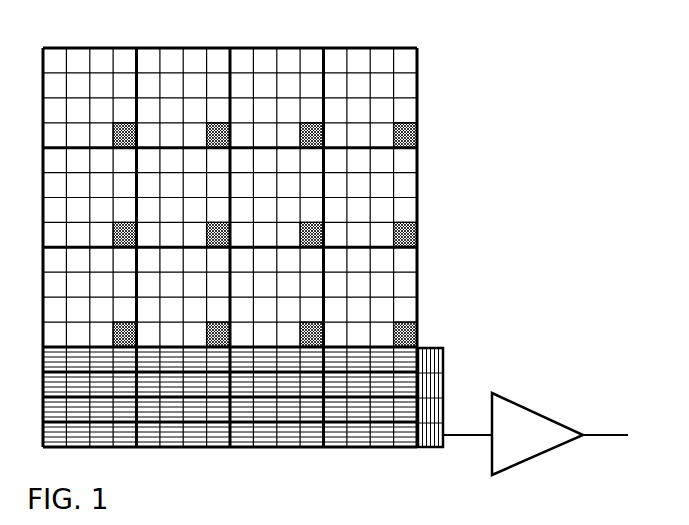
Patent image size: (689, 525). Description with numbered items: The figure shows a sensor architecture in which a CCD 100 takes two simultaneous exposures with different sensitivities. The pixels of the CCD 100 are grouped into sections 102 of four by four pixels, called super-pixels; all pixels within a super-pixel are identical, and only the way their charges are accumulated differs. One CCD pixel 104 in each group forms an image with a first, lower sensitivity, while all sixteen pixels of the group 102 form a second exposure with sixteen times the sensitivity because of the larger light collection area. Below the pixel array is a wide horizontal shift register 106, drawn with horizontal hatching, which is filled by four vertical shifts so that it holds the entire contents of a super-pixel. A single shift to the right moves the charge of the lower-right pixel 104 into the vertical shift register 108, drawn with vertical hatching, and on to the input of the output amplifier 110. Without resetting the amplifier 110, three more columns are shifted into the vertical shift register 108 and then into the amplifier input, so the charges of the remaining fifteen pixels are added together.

The CCD 100 is at (275, 237).
The section of 4×4 pixels (super-pixel) 102 is at (335, 167).
The CCD pixel 104 is at (417, 332).
The horizontal shift register 106 is at (292, 385).
The vertical shift register 108 is at (443, 400).
The output amplifier 110 is at (525, 430).